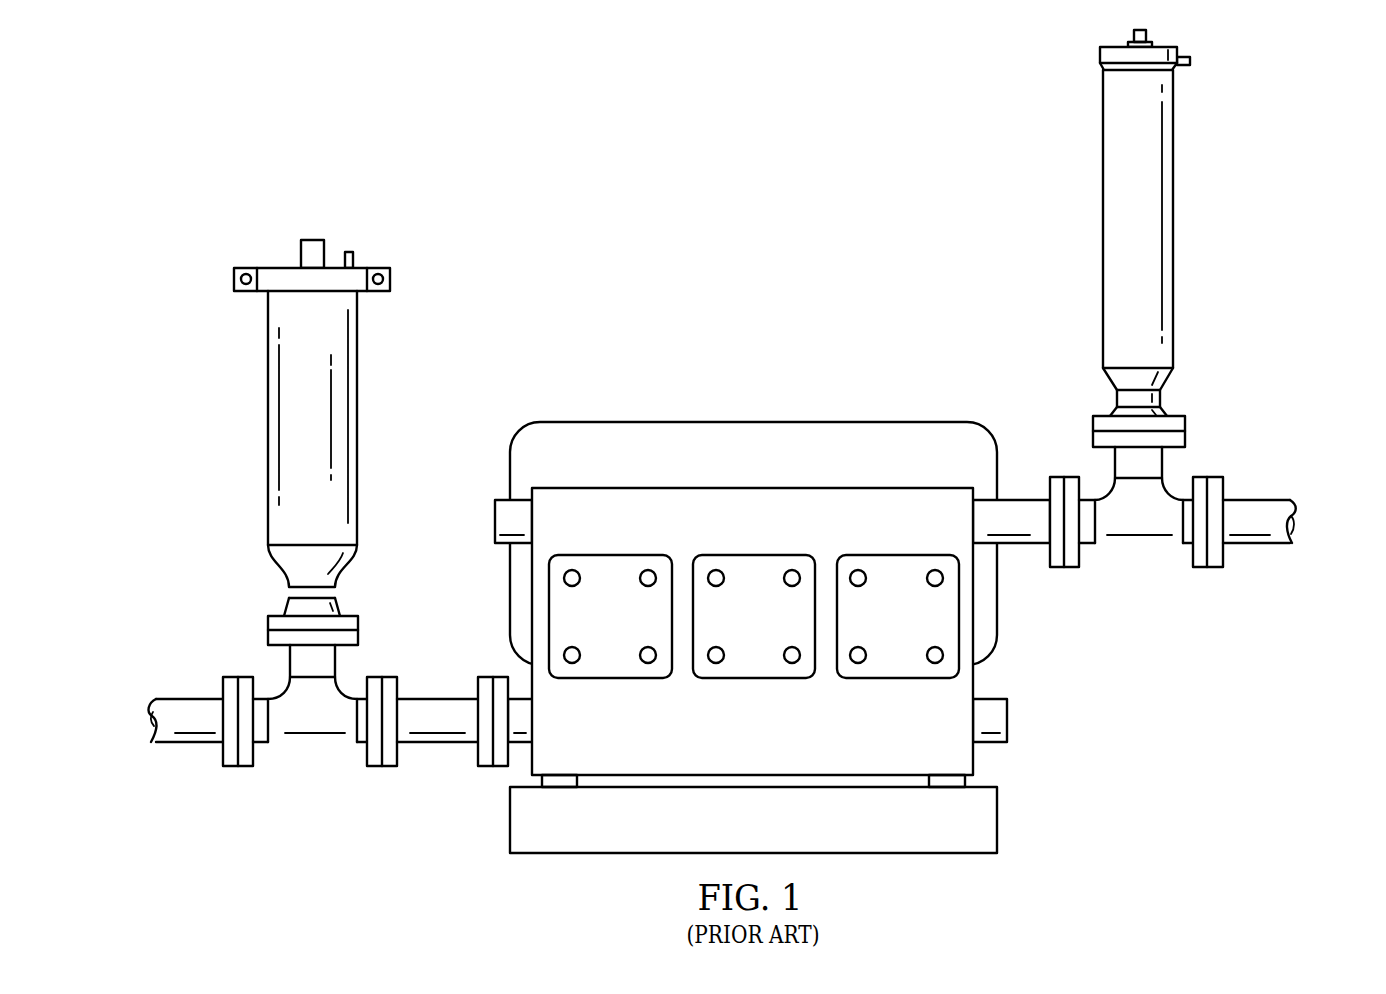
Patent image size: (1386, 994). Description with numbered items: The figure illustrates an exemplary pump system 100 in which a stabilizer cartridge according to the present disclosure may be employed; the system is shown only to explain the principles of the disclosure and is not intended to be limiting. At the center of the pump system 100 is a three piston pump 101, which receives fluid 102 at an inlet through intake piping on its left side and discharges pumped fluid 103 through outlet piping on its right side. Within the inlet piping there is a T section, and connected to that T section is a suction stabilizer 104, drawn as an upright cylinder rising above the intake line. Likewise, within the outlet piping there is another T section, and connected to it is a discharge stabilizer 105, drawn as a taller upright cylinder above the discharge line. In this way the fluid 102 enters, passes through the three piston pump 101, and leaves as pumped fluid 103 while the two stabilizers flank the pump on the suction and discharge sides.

The pump system 100 is at (472, 82).
The three piston pump 101 is at (798, 423).
The fluid 102 is at (135, 720).
The pumped fluid 103 is at (1298, 521).
The suction stabilizer 104 is at (267, 378).
The discharge stabilizer 105 is at (1173, 157).